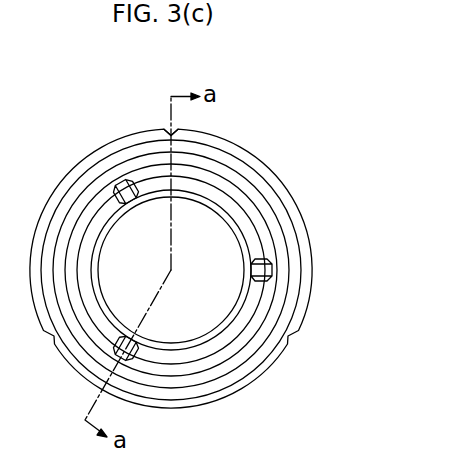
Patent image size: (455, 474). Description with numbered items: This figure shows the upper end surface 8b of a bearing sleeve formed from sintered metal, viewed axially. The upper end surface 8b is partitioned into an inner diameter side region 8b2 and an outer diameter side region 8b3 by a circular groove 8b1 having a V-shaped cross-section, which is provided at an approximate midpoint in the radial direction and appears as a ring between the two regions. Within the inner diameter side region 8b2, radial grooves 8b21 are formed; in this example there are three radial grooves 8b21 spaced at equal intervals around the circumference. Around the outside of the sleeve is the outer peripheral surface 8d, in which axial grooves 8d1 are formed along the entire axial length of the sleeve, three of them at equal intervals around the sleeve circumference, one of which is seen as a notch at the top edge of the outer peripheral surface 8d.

The upper end surface 8b is at (238, 131).
The circular groove 8b1 is at (243, 184).
The inner diameter side region 8b2 is at (243, 215).
The outer diameter side region 8b3 is at (290, 232).
The radial grooves 8b21 is at (122, 181).
The outer peripheral surface 8d is at (60, 180).
The axial grooves 8d1 is at (168, 131).